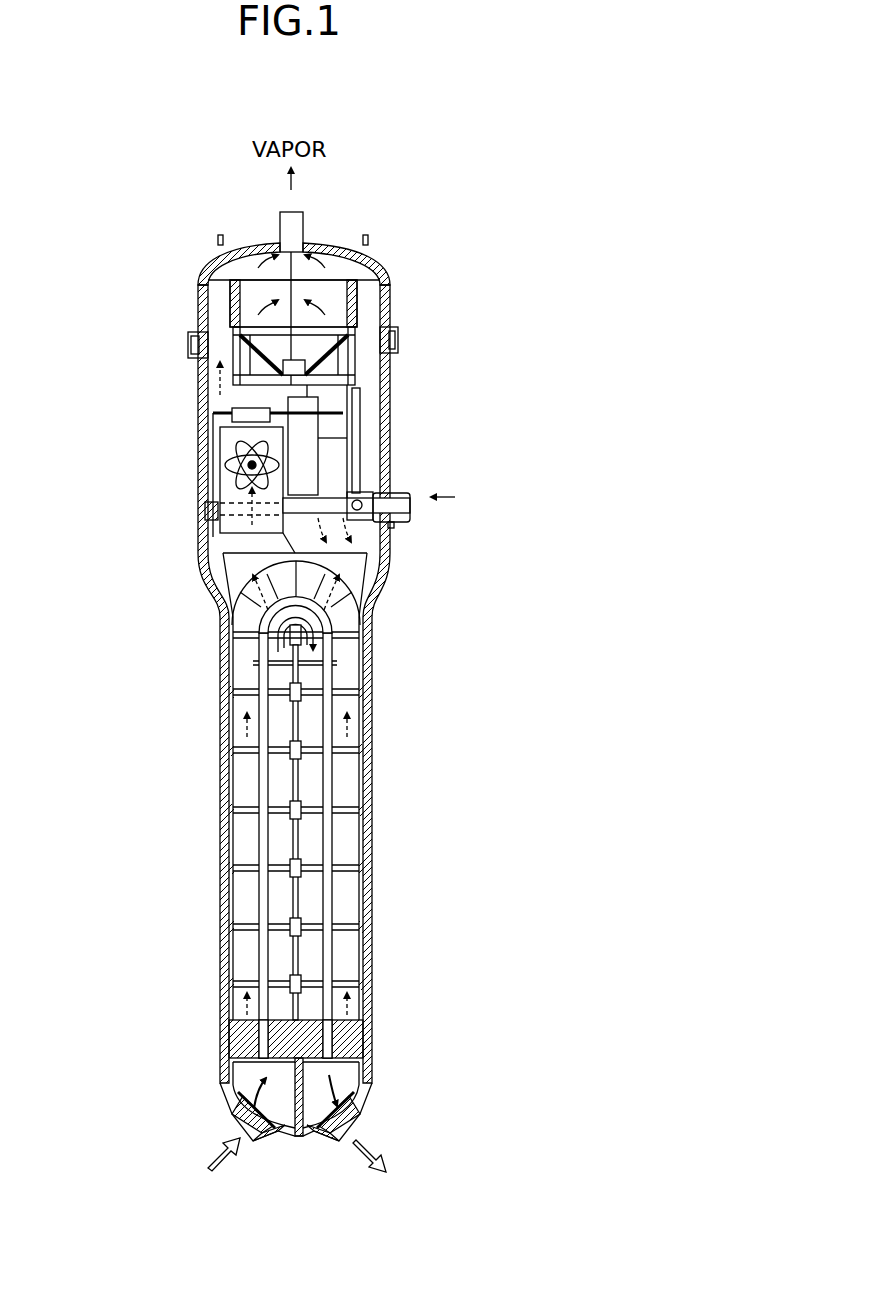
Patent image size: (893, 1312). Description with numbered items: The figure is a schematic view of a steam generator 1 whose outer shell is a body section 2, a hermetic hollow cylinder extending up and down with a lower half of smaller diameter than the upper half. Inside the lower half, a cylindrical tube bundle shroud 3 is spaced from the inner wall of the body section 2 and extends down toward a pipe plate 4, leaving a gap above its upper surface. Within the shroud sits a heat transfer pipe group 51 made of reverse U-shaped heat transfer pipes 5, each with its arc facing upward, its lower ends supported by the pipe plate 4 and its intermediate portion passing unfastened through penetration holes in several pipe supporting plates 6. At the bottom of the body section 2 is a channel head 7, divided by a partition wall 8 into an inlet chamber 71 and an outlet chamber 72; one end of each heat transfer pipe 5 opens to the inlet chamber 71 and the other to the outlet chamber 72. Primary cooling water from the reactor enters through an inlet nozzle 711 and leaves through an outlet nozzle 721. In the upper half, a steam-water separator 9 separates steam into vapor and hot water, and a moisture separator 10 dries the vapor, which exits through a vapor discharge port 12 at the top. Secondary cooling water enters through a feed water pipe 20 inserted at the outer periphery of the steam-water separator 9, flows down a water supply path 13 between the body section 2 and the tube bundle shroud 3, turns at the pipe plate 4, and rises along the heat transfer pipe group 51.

The steam generator 1 is at (527, 130).
The body section 2 is at (200, 380).
The tube bundle shroud 3 is at (212, 588).
The pipe plate 4 is at (372, 1035).
The heat transfer pipe 5 is at (258, 780).
The pipe supporting plate 6 is at (345, 690).
The channel head 7 is at (220, 1068).
The partition wall 8 is at (298, 1136).
The steam-water separator 9 is at (218, 453).
The moisture separator 10 is at (332, 305).
The vapor discharge port 12 is at (307, 224).
The water supply path 13 is at (222, 945).
The feed water pipe 20 is at (403, 486).
The heat transfer pipe group 51 is at (360, 600).
The inlet chamber 71 is at (233, 1083).
The outlet chamber 72 is at (352, 1085).
The inlet nozzle 711 is at (250, 1140).
The outlet nozzle 721 is at (350, 1140).